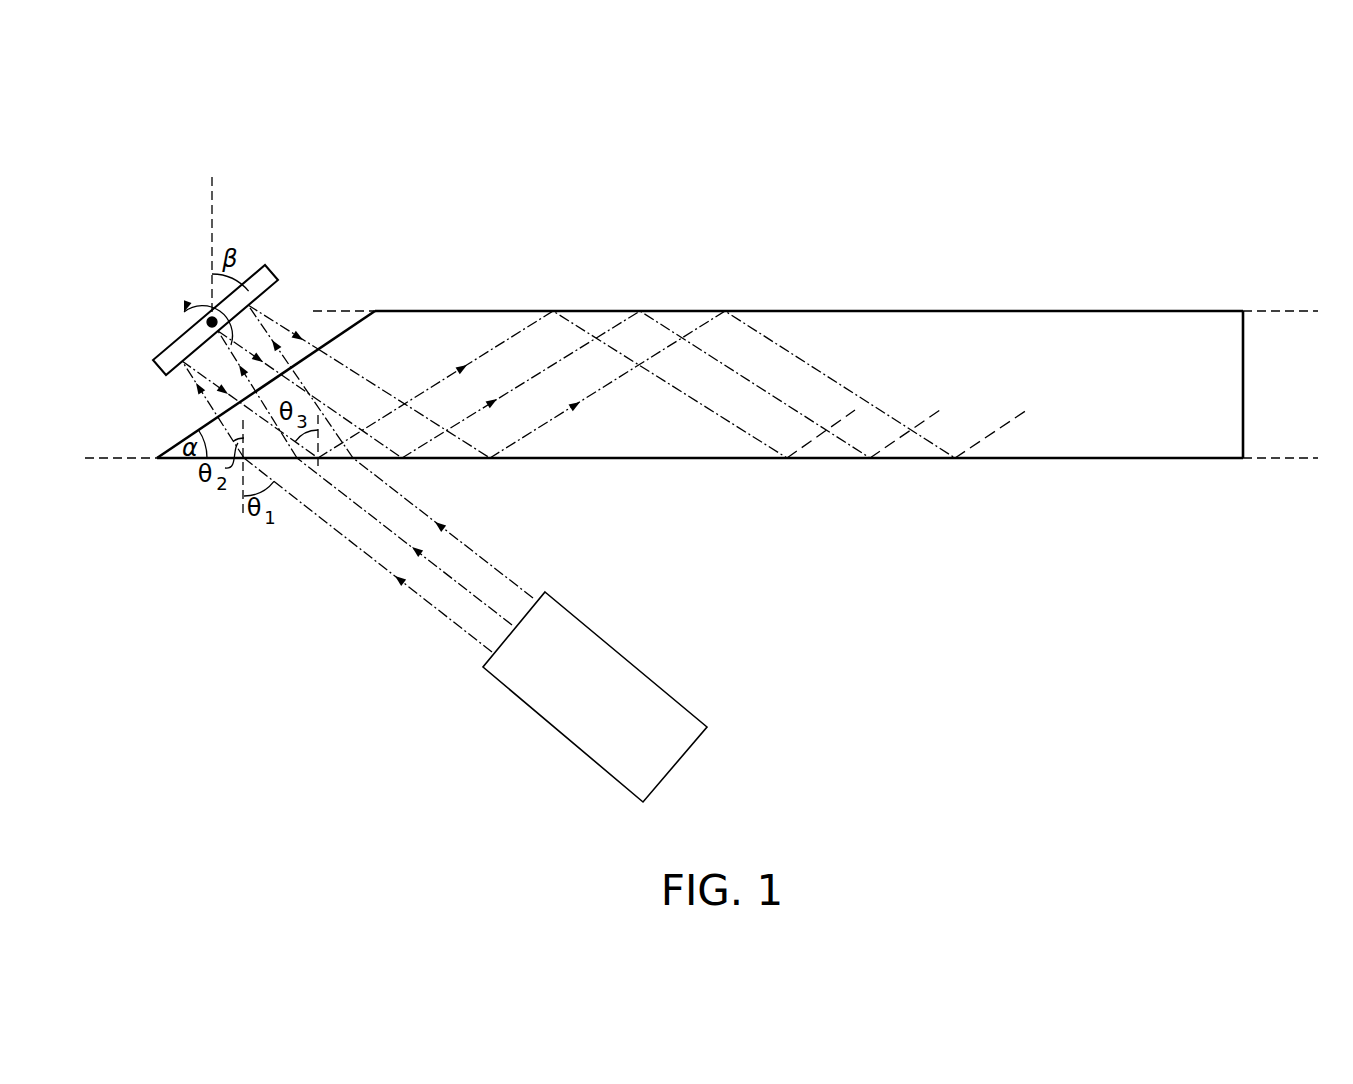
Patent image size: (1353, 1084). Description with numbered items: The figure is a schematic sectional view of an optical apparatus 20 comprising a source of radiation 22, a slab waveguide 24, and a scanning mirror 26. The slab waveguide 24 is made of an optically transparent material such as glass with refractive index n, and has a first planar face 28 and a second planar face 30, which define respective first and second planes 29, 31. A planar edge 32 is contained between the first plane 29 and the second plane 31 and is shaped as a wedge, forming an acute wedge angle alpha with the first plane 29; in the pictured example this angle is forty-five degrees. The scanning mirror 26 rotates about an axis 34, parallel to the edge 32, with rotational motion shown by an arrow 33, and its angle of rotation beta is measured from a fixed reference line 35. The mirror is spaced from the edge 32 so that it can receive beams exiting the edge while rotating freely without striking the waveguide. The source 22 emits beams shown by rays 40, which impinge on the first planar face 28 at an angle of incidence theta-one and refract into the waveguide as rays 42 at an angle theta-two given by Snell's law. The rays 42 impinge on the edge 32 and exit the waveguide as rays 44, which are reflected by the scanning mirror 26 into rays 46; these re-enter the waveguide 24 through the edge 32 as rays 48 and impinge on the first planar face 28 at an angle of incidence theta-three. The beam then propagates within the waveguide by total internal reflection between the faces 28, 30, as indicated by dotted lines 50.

The optical apparatus 20 is at (226, 146).
The source of radiation 22 is at (605, 641).
The slab waveguide 24 is at (985, 310).
The scanning mirror 26 is at (270, 269).
The first planar face 28 is at (1105, 459).
The first plane 29 is at (1285, 459).
The second planar face 30 is at (1151, 310).
The second plane 31 is at (1290, 310).
The planar edge 32 is at (342, 330).
The arrow 33 is at (190, 304).
The axis 34 is at (190, 330).
The reference line 35 is at (211, 203).
The rays 40 is at (395, 536).
The rays 42 is at (218, 418).
The rays 44 is at (199, 389).
The rays 46 is at (280, 322).
The rays 48 is at (360, 376).
The dotted lines 50 is at (1000, 428).